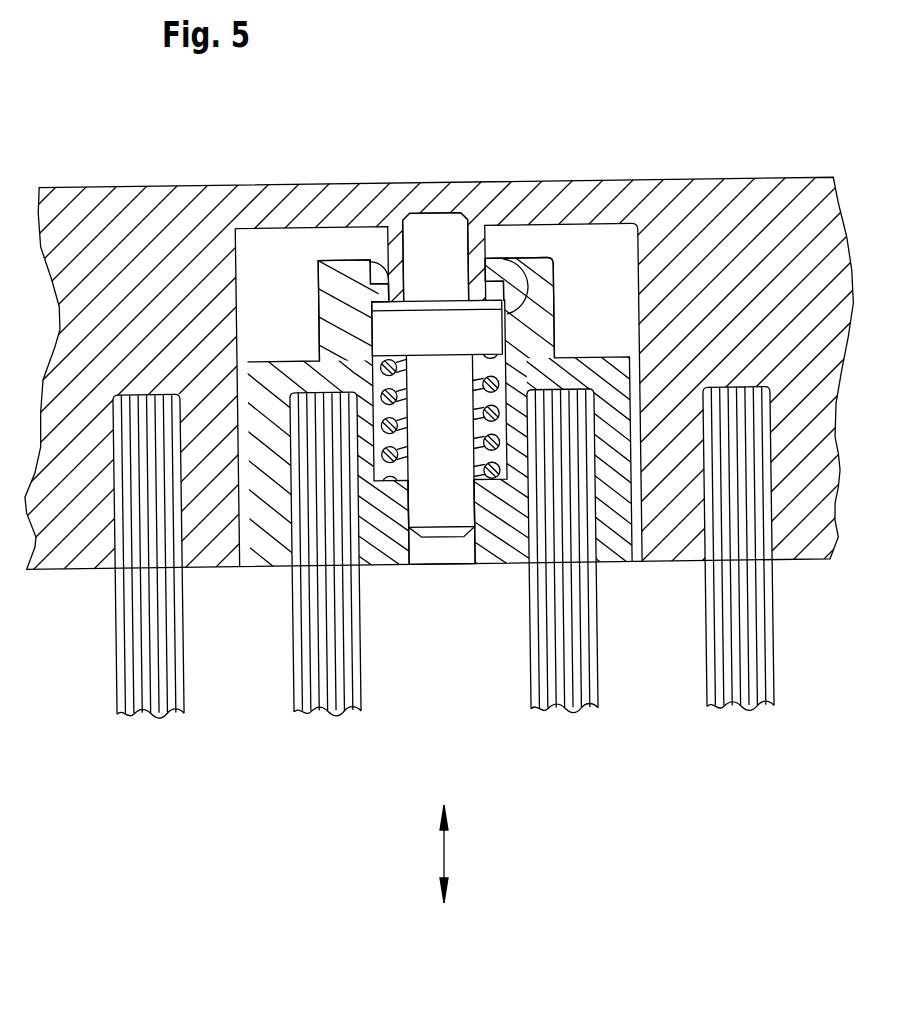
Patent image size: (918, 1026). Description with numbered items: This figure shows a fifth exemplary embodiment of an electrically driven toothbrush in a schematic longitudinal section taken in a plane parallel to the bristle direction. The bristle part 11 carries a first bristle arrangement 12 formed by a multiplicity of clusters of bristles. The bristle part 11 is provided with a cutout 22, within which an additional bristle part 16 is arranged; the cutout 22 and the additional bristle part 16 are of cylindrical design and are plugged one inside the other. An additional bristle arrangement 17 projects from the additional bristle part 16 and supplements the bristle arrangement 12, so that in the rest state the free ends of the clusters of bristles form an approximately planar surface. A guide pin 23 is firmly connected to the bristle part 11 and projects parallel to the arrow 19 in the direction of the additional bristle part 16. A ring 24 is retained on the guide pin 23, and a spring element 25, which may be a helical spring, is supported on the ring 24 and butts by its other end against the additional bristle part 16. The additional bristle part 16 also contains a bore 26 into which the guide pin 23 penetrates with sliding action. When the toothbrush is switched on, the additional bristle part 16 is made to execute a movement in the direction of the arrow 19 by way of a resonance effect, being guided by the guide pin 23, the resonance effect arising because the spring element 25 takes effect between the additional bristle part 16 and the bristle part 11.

The bristle part 11 is at (737, 198).
The bristle arrangement 12 is at (140, 711).
The additional bristle part 16 is at (343, 293).
The additional bristle arrangement 17 is at (318, 711).
The arrow 19 is at (445, 852).
The cutout 22 is at (602, 258).
The guide pin 23 is at (438, 240).
The ring 24 is at (488, 325).
The spring element 25 is at (488, 482).
The bore 26 is at (435, 553).